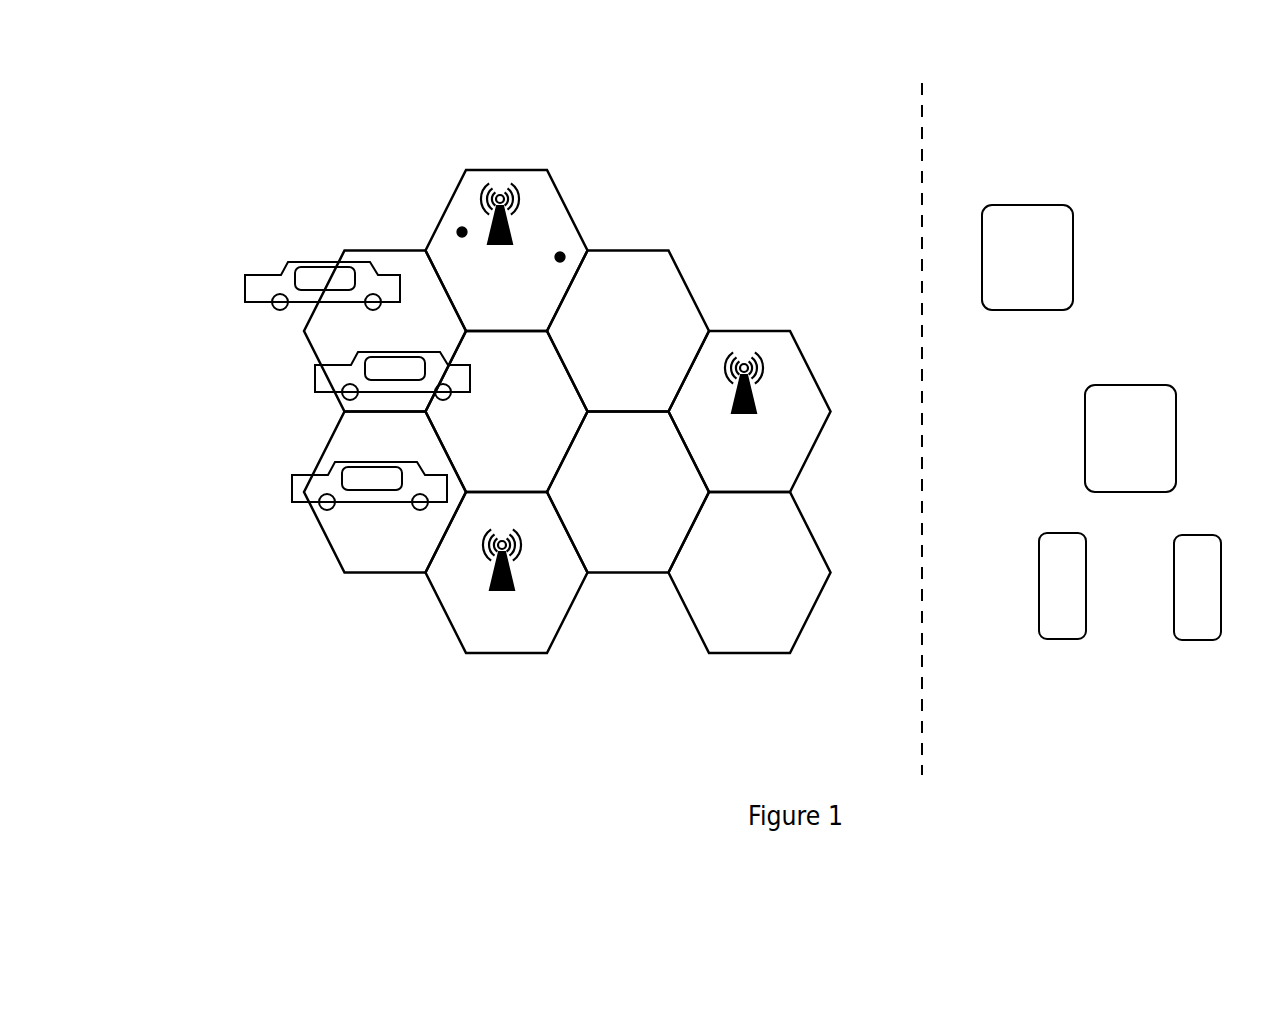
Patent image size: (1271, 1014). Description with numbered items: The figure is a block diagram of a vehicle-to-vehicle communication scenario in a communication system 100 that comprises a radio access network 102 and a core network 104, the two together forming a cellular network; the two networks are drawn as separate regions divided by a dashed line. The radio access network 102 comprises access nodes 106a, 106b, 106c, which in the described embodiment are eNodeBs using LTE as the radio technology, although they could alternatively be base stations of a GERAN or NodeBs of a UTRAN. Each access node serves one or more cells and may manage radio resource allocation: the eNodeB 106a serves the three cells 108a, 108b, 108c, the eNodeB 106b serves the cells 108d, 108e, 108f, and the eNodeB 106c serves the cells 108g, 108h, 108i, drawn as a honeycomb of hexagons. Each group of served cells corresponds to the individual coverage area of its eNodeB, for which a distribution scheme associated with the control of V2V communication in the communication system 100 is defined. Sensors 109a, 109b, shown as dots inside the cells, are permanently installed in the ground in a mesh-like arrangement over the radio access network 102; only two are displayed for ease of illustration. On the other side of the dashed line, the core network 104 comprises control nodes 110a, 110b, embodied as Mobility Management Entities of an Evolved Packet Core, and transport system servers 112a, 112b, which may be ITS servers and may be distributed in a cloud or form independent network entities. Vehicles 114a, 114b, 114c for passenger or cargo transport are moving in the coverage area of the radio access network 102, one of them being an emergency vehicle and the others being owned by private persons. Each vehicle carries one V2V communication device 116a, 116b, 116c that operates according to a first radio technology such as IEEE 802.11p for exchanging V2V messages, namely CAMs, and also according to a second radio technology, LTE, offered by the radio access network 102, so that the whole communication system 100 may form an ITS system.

The communication system 100 is at (834, 58).
The radio access network 102 is at (863, 123).
The core network 104 is at (1007, 123).
The access node 106a is at (482, 205).
The access node 106b is at (493, 600).
The access node 106c is at (753, 350).
The cell 108a is at (328, 337).
The cell 108b is at (543, 188).
The cell 108c is at (378, 560).
The cell 108d is at (520, 350).
The cell 108e is at (620, 560).
The cell 108f is at (543, 620).
The cell 108g is at (665, 272).
The cell 108h is at (808, 428).
The cell 108i is at (783, 620).
The sensor 109a is at (458, 228).
The sensor 109b is at (565, 255).
The control node 110a is at (1053, 639).
The control node 110b is at (1190, 640).
The transport system server 112a is at (1042, 205).
The transport system server 112b is at (1135, 385).
The vehicle 114a is at (245, 300).
The vehicle 114b is at (320, 390).
The vehicle 114c is at (292, 500).
The V2V communication device 116a is at (303, 267).
The V2V communication device 116b is at (380, 368).
The V2V communication device 116c is at (372, 488).